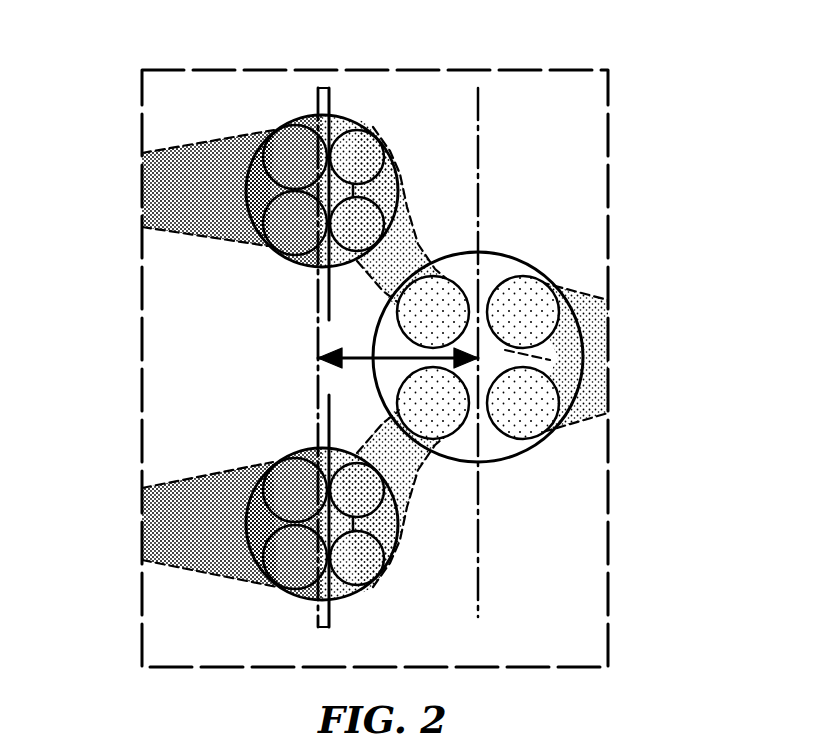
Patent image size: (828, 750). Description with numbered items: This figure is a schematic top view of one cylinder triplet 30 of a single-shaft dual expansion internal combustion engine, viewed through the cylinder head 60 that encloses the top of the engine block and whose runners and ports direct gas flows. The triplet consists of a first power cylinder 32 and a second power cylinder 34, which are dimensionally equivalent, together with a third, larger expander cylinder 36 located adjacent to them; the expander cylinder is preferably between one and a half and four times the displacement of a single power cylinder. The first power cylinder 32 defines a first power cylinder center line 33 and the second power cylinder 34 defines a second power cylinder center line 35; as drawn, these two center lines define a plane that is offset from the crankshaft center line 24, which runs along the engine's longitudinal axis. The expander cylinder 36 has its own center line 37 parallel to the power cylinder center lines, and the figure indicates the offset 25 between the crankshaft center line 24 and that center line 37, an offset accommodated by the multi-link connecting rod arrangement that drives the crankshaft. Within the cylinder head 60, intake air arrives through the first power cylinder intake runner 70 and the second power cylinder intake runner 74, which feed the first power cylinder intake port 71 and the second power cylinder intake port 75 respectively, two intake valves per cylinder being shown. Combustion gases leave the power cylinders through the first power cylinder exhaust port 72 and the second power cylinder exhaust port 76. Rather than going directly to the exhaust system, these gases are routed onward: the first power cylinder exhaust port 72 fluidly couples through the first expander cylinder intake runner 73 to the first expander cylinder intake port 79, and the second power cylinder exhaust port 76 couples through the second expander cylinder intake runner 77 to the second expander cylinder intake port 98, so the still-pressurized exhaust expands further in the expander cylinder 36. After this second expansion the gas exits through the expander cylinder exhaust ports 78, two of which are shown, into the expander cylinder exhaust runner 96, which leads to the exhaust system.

The cylinder triplet 30 is at (558, 94).
The crankshaft center line 24 is at (314, 107).
The first power cylinder center line 33 is at (333, 107).
The second power cylinder center line 35 is at (334, 612).
The first power cylinder 32 is at (273, 128).
The second power cylinder 34 is at (273, 460).
The expander cylinder 36 is at (524, 258).
The expander cylinder center line 37 is at (480, 172).
The offset 25 is at (314, 372).
The first power cylinder intake runner 70 is at (183, 190).
The first power cylinder intake port 71 is at (287, 228).
The first power cylinder exhaust port 72 is at (358, 223).
The first expander cylinder intake runner 73 is at (365, 285).
The second power cylinder intake runner 74 is at (183, 532).
The second power cylinder intake port 75 is at (287, 557).
The second power cylinder exhaust port 76 is at (360, 560).
The second expander cylinder intake runner 77 is at (393, 450).
The first expander cylinder intake port 79 is at (430, 308).
The second expander cylinder intake port 98 is at (440, 412).
The expander cylinder exhaust port 78 is at (528, 402).
The expander cylinder exhaust runner 96 is at (597, 317).
The cylinder head 60 is at (556, 530).